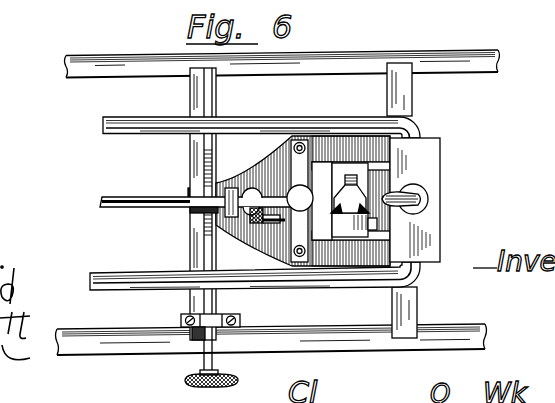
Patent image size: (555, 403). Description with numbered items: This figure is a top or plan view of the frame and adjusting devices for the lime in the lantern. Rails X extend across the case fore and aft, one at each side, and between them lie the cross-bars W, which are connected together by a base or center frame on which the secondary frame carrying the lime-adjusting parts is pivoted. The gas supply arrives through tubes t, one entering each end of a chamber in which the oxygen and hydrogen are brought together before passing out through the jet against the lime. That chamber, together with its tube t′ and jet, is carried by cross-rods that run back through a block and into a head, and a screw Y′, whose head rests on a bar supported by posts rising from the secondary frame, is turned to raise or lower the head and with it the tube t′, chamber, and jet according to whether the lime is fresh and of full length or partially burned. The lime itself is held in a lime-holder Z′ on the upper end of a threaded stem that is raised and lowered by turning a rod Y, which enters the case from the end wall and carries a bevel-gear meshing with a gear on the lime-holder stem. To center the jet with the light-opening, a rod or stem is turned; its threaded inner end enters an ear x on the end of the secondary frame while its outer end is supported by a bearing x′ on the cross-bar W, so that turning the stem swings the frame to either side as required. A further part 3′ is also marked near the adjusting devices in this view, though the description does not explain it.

The ear x is at (177, 184).
The bearing x′ is at (181, 320).
The tube t is at (255, 270).
The tube t′ is at (123, 117).
The cross-bar W is at (316, 217).
The rod Y is at (150, 207).
The screw Y′ is at (300, 198).
The lime-holder Z′ is at (350, 188).
The nut below shaft 3′ is at (221, 238).